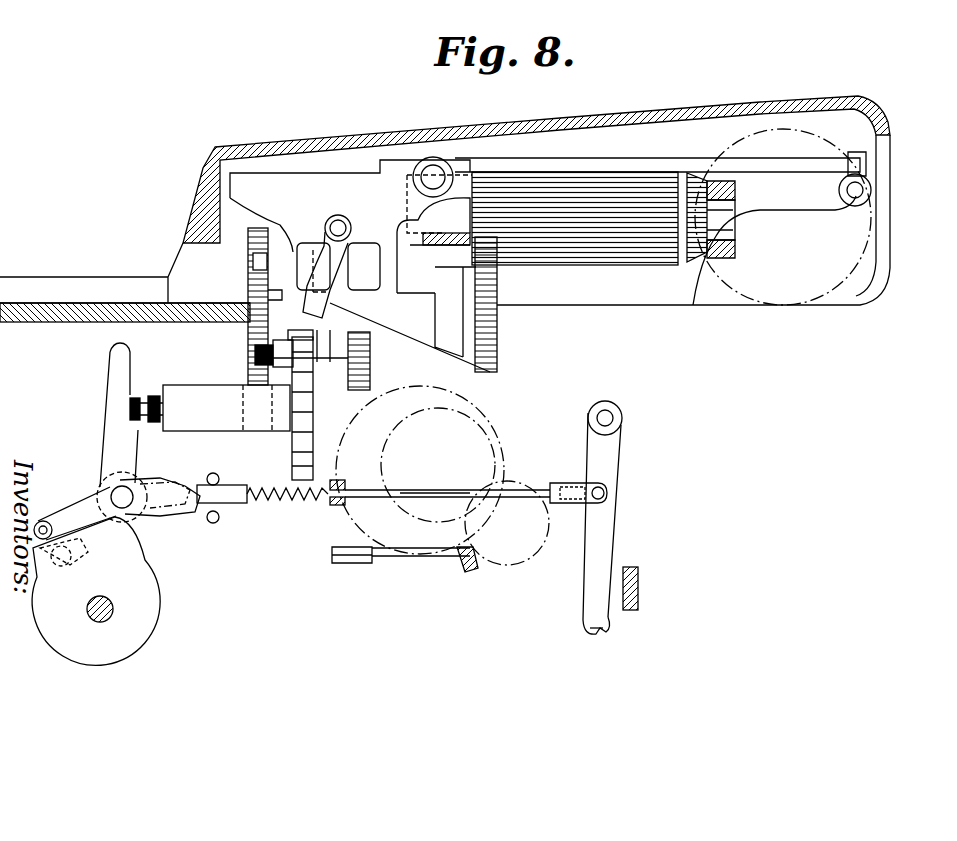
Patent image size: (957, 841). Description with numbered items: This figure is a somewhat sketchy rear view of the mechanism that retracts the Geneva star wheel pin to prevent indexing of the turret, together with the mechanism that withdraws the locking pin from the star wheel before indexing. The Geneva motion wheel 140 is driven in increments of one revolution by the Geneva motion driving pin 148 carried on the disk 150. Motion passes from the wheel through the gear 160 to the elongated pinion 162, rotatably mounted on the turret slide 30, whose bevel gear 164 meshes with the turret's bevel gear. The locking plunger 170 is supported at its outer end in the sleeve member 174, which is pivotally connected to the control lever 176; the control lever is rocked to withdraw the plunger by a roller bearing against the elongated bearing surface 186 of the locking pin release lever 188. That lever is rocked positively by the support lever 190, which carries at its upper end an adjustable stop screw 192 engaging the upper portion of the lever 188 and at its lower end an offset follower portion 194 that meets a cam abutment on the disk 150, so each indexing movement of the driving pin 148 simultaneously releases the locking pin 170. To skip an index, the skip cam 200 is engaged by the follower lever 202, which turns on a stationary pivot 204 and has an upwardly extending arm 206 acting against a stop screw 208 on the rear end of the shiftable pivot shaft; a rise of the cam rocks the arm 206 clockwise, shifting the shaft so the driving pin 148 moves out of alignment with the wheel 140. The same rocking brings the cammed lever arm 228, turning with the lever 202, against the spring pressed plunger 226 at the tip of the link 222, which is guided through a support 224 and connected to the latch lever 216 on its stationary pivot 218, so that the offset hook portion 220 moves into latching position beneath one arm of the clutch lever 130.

The turret slide 30 is at (866, 101).
The control lever 176 is at (553, 160).
The elongated bearing surface 186 is at (270, 183).
The locking pin release lever 188 is at (218, 218).
The support lever 190 is at (334, 253).
The adjustable stop screw 192 is at (343, 224).
The sleeve member 174 is at (862, 186).
The locking plunger 170 is at (864, 192).
The Geneva motion wheel 140 is at (258, 288).
The offset follower portion 194 is at (306, 311).
The elongated pinion 162 is at (565, 246).
The bevel gear 164 is at (696, 258).
The gear 160 is at (498, 328).
The Geneva motion driving pin 148 is at (371, 361).
The disk 150 is at (301, 441).
The stop screw 208 is at (138, 393).
The upwardly extending arm 206 is at (115, 354).
The stationary pivot 204 is at (118, 494).
The follower lever 202 is at (70, 509).
The lever arm 228 is at (176, 507).
The spring pressed plunger 226 is at (226, 498).
The support 224 is at (333, 506).
The link 222 is at (516, 492).
The skip cam 200 is at (58, 622).
The latch lever 216 is at (612, 463).
The stationary pivot 218 is at (616, 410).
The offset hook portion 220 is at (600, 626).
The clutch lever 130 is at (638, 578).